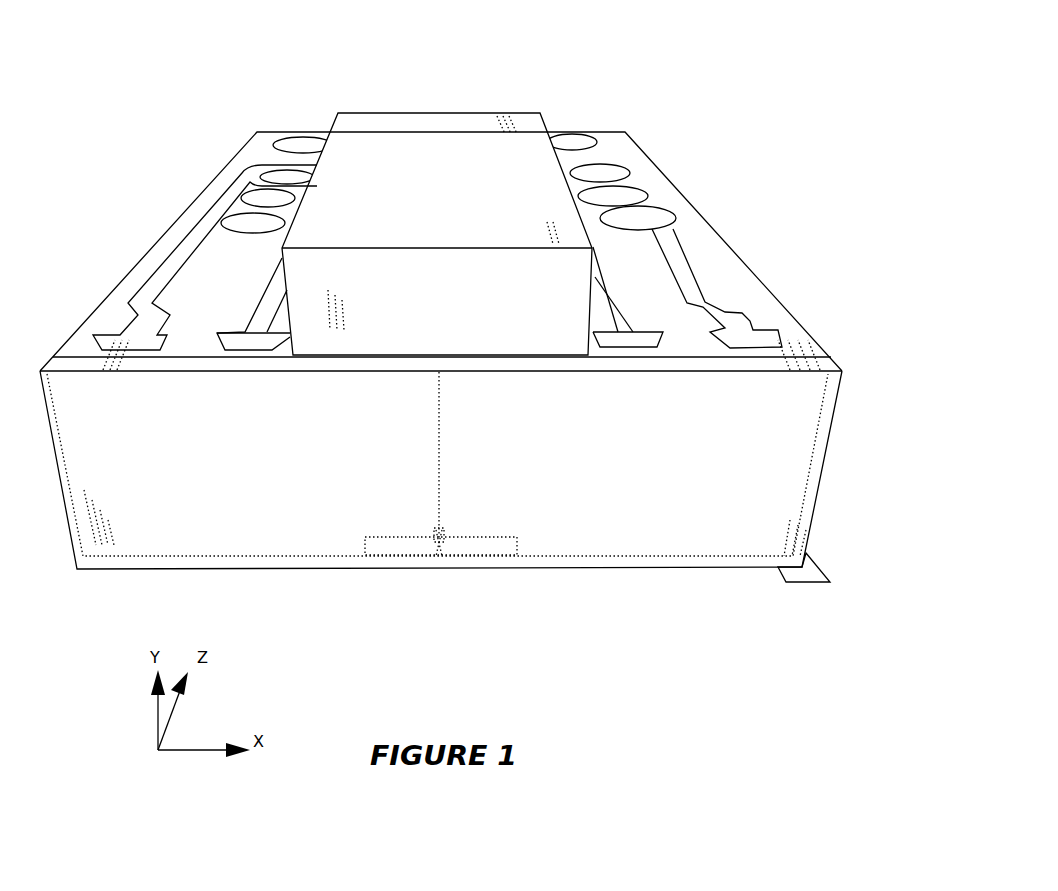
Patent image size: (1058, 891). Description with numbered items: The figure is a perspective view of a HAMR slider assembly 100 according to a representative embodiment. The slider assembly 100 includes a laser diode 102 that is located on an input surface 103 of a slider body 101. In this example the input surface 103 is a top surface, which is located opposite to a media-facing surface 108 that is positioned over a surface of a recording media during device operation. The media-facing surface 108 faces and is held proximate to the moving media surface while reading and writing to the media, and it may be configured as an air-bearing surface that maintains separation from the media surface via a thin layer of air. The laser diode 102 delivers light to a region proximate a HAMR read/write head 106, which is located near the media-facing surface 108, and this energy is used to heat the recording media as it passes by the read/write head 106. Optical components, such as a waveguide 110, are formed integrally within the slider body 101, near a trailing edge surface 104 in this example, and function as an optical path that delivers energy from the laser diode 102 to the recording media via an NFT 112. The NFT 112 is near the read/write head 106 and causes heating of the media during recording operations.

The HAMR slider assembly 100 is at (636, 71).
The slider body 101 is at (232, 158).
The laser diode 102 is at (363, 113).
The input surface 103 is at (108, 315).
The trailing edge surface 104 is at (140, 543).
The HAMR read/write head 106 is at (448, 552).
The media-facing surface 108 is at (822, 585).
The waveguide 110 is at (440, 443).
The NFT 112 is at (432, 567).